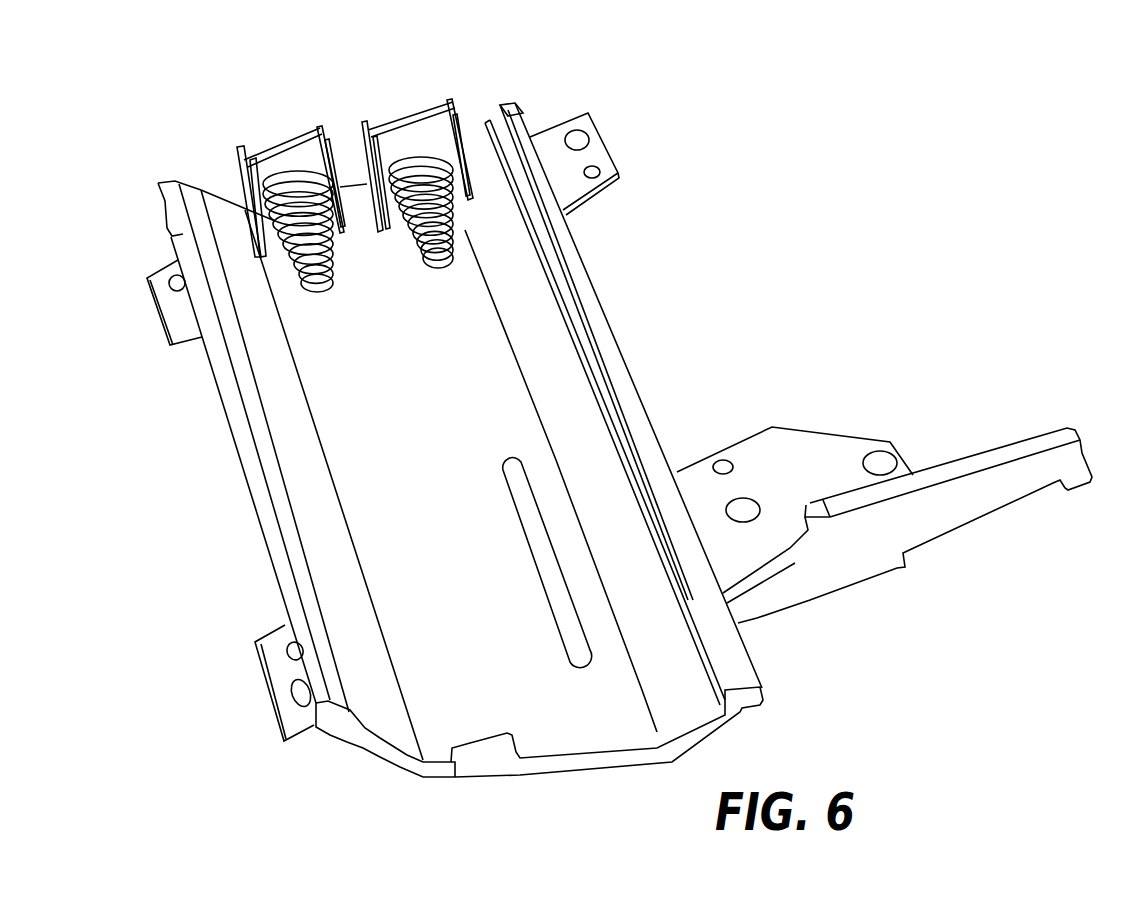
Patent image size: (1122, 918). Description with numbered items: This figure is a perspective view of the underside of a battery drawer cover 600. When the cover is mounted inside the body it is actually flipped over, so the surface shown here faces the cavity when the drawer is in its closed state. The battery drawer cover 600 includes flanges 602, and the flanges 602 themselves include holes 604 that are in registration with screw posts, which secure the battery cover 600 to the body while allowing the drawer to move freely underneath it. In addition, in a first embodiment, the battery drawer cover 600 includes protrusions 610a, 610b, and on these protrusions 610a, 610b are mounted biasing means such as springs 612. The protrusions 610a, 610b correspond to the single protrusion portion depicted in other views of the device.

The battery drawer cover 600 is at (680, 303).
The flanges 602 is at (593, 153).
The holes 604 is at (576, 140).
The protrusion 610a is at (292, 150).
The protrusion 610b is at (413, 127).
The springs 612 is at (276, 222).